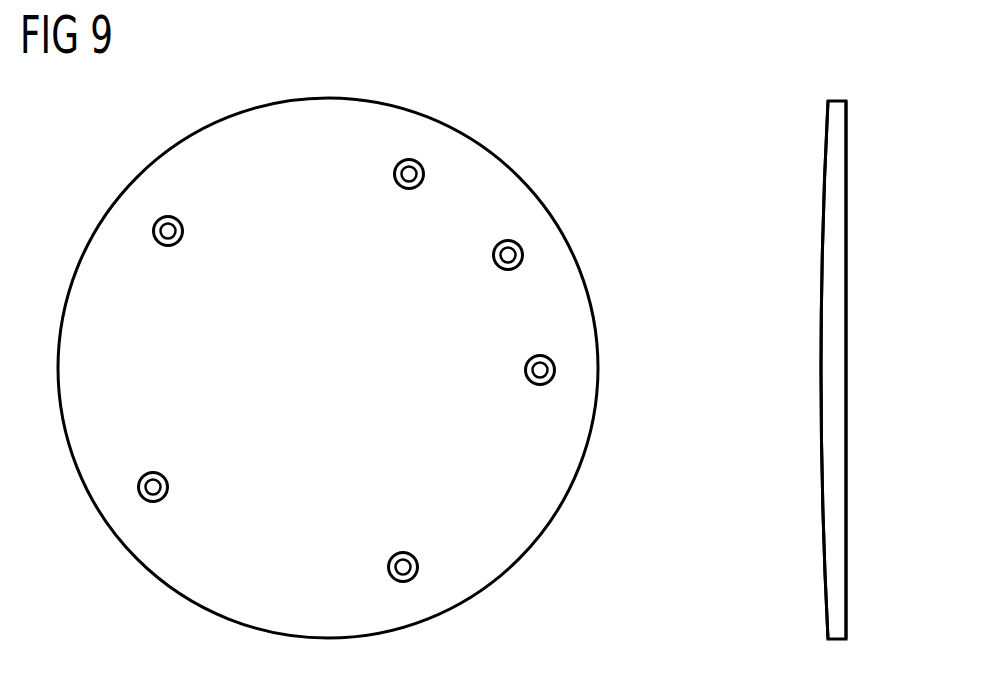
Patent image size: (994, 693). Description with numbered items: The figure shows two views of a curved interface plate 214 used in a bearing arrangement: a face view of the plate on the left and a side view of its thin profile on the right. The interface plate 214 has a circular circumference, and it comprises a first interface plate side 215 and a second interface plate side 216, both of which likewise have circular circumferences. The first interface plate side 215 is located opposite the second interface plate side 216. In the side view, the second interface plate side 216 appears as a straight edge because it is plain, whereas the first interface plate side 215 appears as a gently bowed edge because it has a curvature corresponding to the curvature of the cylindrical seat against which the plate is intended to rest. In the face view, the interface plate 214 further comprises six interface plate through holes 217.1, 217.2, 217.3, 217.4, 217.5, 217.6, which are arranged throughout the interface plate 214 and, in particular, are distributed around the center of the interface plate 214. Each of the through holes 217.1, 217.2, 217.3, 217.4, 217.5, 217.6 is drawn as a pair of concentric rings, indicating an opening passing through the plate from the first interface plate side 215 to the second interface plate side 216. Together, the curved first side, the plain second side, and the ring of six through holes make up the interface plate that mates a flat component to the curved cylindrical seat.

The interface plate 214 is at (223, 607).
The first interface plate side 215 is at (818, 252).
The second interface plate side 216 is at (846, 209).
The interface plate through hole 217.1 is at (409, 174).
The interface plate through hole 217.2 is at (508, 255).
The interface plate through hole 217.3 is at (540, 370).
The interface plate through hole 217.4 is at (403, 567).
The interface plate through hole 217.5 is at (153, 487).
The interface plate through hole 217.6 is at (168, 231).